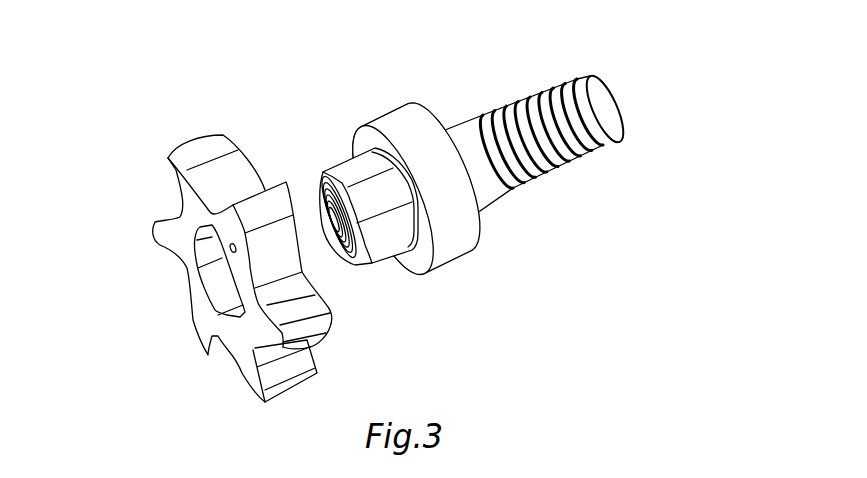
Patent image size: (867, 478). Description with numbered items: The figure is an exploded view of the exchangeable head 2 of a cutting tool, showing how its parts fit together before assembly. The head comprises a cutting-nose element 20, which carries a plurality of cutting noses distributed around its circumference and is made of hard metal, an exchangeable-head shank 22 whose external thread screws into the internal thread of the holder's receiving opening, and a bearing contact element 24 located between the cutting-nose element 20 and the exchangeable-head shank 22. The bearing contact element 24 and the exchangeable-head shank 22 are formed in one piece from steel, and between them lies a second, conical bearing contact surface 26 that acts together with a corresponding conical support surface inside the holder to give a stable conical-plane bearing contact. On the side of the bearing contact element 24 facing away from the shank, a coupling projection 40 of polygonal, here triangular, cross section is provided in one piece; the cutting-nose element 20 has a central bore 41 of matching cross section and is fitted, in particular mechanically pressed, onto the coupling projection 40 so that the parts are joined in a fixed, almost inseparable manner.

The exchangeable head 2 is at (531, 191).
The cutting-nose element 20 is at (172, 237).
The exchangeable-head shank 22 is at (575, 170).
The bearing contact element 24 is at (474, 247).
The second, conical bearing contact surface 26 is at (497, 190).
The coupling projection 40 is at (394, 240).
The central bore 41 is at (210, 283).